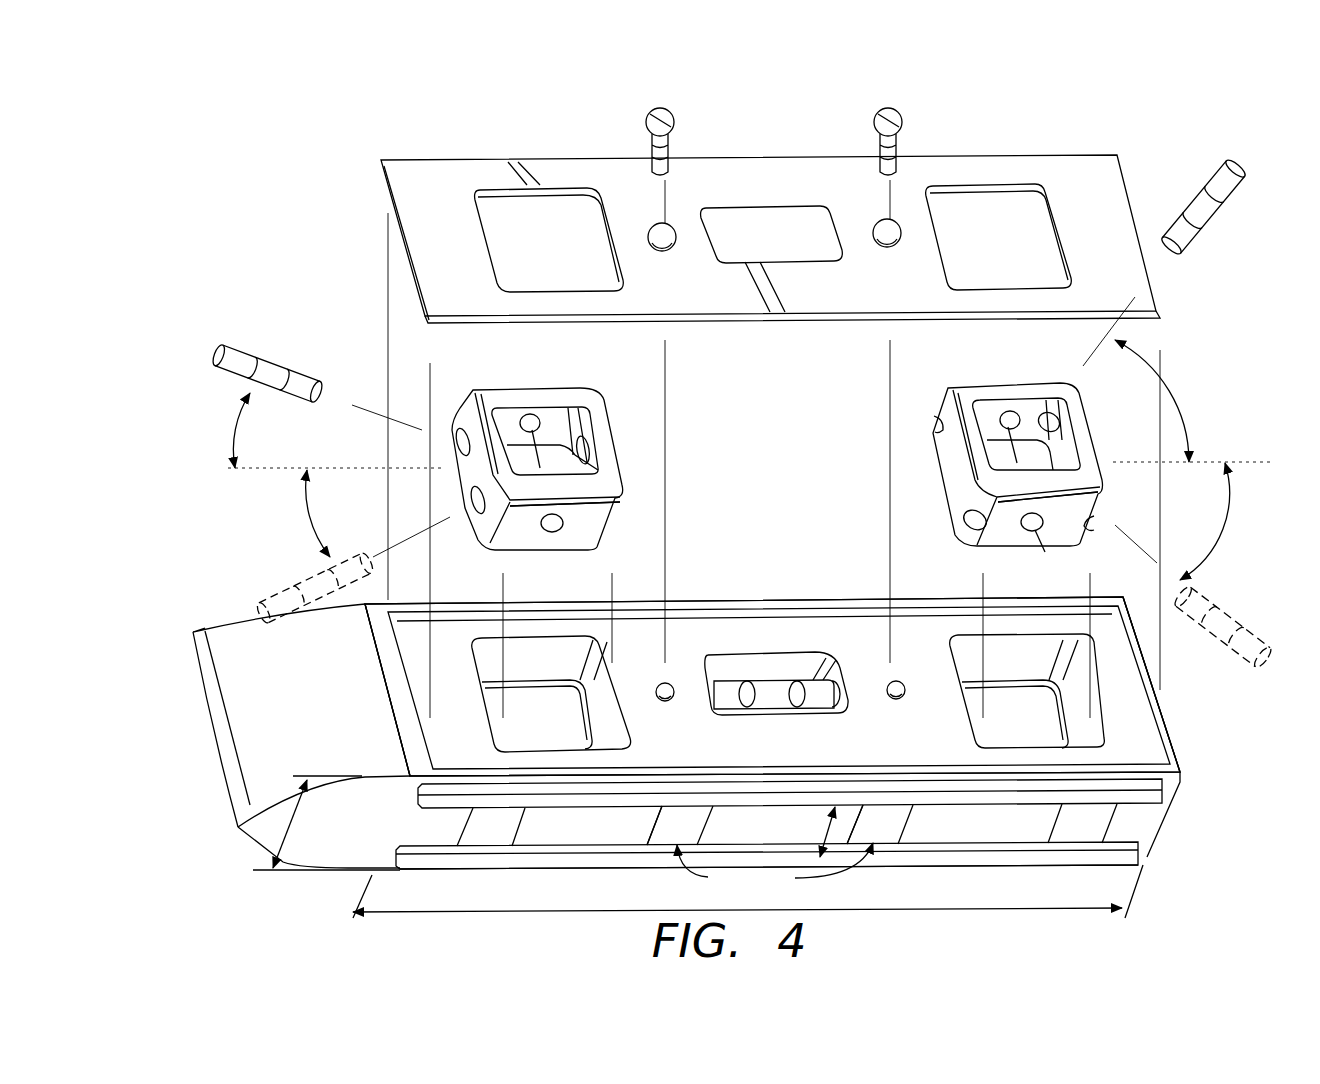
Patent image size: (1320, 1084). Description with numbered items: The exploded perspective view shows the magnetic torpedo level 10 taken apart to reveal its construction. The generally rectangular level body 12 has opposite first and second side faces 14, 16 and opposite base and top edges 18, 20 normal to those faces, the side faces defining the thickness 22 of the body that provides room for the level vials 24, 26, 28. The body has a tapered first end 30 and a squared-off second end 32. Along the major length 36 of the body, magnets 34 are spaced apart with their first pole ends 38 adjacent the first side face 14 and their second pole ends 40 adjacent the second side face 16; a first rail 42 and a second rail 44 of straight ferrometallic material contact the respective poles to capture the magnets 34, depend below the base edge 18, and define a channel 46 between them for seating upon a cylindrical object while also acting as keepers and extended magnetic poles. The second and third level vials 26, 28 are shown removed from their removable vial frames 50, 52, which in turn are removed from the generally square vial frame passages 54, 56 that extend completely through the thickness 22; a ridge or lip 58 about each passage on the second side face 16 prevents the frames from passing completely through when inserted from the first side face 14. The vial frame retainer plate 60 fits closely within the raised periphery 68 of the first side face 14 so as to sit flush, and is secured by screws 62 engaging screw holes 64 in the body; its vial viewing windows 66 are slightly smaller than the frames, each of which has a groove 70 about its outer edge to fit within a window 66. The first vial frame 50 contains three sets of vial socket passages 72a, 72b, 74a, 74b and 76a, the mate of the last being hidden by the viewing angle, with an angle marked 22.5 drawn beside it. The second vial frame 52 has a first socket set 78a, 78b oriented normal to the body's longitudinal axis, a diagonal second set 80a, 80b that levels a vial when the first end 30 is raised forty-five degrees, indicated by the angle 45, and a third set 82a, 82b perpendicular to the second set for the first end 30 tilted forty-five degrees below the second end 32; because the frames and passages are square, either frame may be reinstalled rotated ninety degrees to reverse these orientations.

The magnetic torpedo level 10 is at (1213, 793).
The level body 12 is at (698, 600).
The first side face 14 is at (372, 630).
The second side face 16 is at (765, 647).
The base edge 18 is at (570, 848).
The top edge 20 is at (822, 627).
The thickness 22 is at (270, 830).
The pin angle 22.5 is at (247, 475).
The first level vial 24 is at (773, 710).
The second level vial 26 is at (353, 557).
The third level vial 28 is at (1187, 198).
The tapered first end 30 is at (232, 617).
The squared second end 32 is at (1163, 708).
The magnets 34 is at (517, 827).
The major length 36 is at (905, 912).
The first pole ends 38 is at (695, 808).
The second pole ends 40 is at (775, 870).
The first rail 42 is at (422, 788).
The second rail 44 is at (400, 857).
The forty-five degree angle 45 is at (1172, 460).
The channel 46 is at (828, 826).
The first vial frame 50 is at (593, 383).
The second vial frame 52 is at (940, 482).
The first vial frame passage 54 is at (512, 722).
The second vial frame passage 56 is at (992, 722).
The ridge or lip 58 is at (527, 690).
The vial frame retainer plate 60 is at (785, 322).
The screws 62 is at (875, 126).
The screw holes 64 is at (660, 684).
The vial viewing windows 66 is at (492, 240).
The raised periphery 68 is at (727, 617).
The groove 70 is at (585, 498).
The vial socket passage 72a is at (535, 413).
The vial socket passage 72b is at (552, 532).
The vial socket passage 74a is at (478, 514).
The vial socket passage 74b is at (590, 446).
The vial socket passage 76a is at (462, 436).
The vial socket 78a is at (1010, 411).
The vial socket 78b is at (1032, 531).
The vial socket 80a is at (971, 524).
The vial socket 80b is at (1054, 418).
The vial socket 82a is at (938, 420).
The vial socket 82b is at (1087, 530).